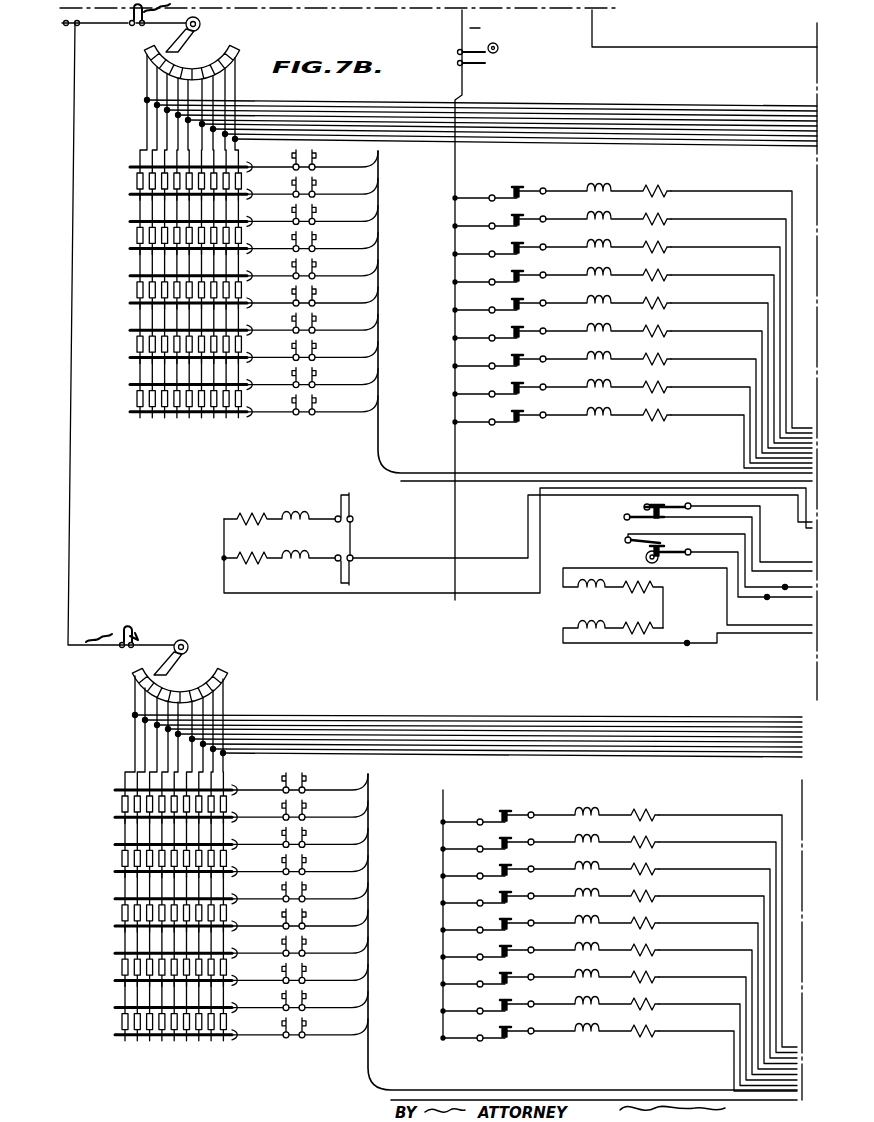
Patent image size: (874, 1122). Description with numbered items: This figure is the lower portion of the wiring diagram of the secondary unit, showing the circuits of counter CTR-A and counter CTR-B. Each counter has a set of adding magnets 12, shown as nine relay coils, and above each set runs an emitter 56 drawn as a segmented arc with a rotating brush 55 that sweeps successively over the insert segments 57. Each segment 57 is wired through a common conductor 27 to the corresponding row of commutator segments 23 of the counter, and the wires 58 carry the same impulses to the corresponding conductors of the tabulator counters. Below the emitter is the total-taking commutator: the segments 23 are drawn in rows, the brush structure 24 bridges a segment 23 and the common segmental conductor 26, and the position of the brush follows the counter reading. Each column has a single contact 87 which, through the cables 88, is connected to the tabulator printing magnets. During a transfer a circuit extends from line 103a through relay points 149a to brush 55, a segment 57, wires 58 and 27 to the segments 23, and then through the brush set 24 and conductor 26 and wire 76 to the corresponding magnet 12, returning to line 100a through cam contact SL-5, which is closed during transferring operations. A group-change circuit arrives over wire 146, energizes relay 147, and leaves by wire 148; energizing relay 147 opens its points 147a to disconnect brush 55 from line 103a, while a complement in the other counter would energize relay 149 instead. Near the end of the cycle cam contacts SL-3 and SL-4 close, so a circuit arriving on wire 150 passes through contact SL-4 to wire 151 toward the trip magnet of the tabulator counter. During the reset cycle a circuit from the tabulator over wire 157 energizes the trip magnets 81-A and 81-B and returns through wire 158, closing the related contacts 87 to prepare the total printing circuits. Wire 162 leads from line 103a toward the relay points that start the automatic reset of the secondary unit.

The counter magnets 12 is at (603, 223).
The commutator segments 23 is at (130, 332).
The brush structure 24 is at (237, 868).
The segmental conductor 26 is at (130, 222).
The common conductor 27 is at (172, 138).
The commutator brush 55 is at (200, 27).
The emitter 56 is at (236, 50).
The insert segments 57 is at (184, 374).
The wires 58 is at (390, 112).
The wires 76 is at (762, 436).
The contacts 87 is at (312, 178).
The cables 88 is at (566, 462).
The line 100a is at (491, 305).
The line 103a is at (70, 465).
The wire 146 is at (687, 645).
The relay 147 is at (563, 628).
The relay points 147a is at (138, 628).
The wire 148 is at (737, 646).
The relay 149 is at (142, 30).
The relay points 149a is at (128, 14).
The wire 150 is at (785, 590).
The wire 151 is at (767, 600).
The wire 157 is at (410, 560).
The wire 158 is at (424, 588).
The wire 162 is at (735, 50).
The trip magnet 81-A is at (288, 523).
The trip magnet 81-B is at (287, 569).
The cam contact SL-3 is at (640, 510).
The cam contact SL-4 is at (640, 550).
The cam contact SL-5 is at (490, 60).
The counter A CTR-A is at (570, 91).
The counter B CTR-B is at (555, 708).